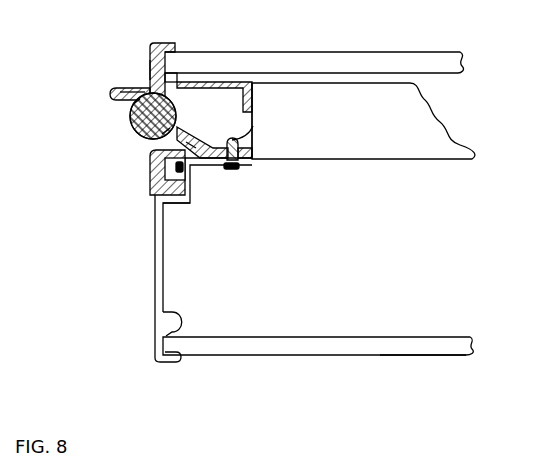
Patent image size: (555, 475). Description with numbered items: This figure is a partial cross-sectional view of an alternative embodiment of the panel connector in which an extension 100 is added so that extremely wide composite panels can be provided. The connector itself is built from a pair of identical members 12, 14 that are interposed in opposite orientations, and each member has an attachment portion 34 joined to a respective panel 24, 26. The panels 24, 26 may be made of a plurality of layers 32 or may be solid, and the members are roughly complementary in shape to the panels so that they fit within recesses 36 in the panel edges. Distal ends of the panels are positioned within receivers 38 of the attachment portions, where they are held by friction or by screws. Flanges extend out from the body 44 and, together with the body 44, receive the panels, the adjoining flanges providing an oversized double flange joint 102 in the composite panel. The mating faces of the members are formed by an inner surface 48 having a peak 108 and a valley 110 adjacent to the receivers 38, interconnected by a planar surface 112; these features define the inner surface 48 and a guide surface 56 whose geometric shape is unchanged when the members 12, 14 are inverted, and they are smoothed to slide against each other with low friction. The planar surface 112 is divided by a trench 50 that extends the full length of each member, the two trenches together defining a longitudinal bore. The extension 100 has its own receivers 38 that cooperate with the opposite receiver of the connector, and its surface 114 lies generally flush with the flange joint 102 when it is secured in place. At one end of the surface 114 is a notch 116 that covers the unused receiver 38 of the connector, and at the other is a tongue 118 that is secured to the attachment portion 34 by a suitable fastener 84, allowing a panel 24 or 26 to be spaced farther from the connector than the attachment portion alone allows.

The first member 12 is at (194, 55).
The second member 14 is at (168, 44).
The first panel 24 is at (333, 51).
The second panel 26 is at (318, 184).
The layers 32 is at (402, 357).
The attachment portion 34 is at (215, 82).
The recesses 36 is at (368, 90).
The receivers 38 is at (173, 71).
The body 44 is at (148, 72).
The inner surface 48 is at (125, 98).
The trench 50 is at (130, 125).
The guide surface 56 is at (160, 133).
The fastener 84 is at (252, 127).
The extension 100 is at (154, 251).
The double flange joint 102 is at (165, 288).
The peak 108 is at (116, 88).
The valley 110 is at (190, 143).
The planar surface 112 is at (132, 108).
The surface 114 is at (153, 307).
The notch 116 is at (180, 201).
The tongue 118 is at (253, 161).